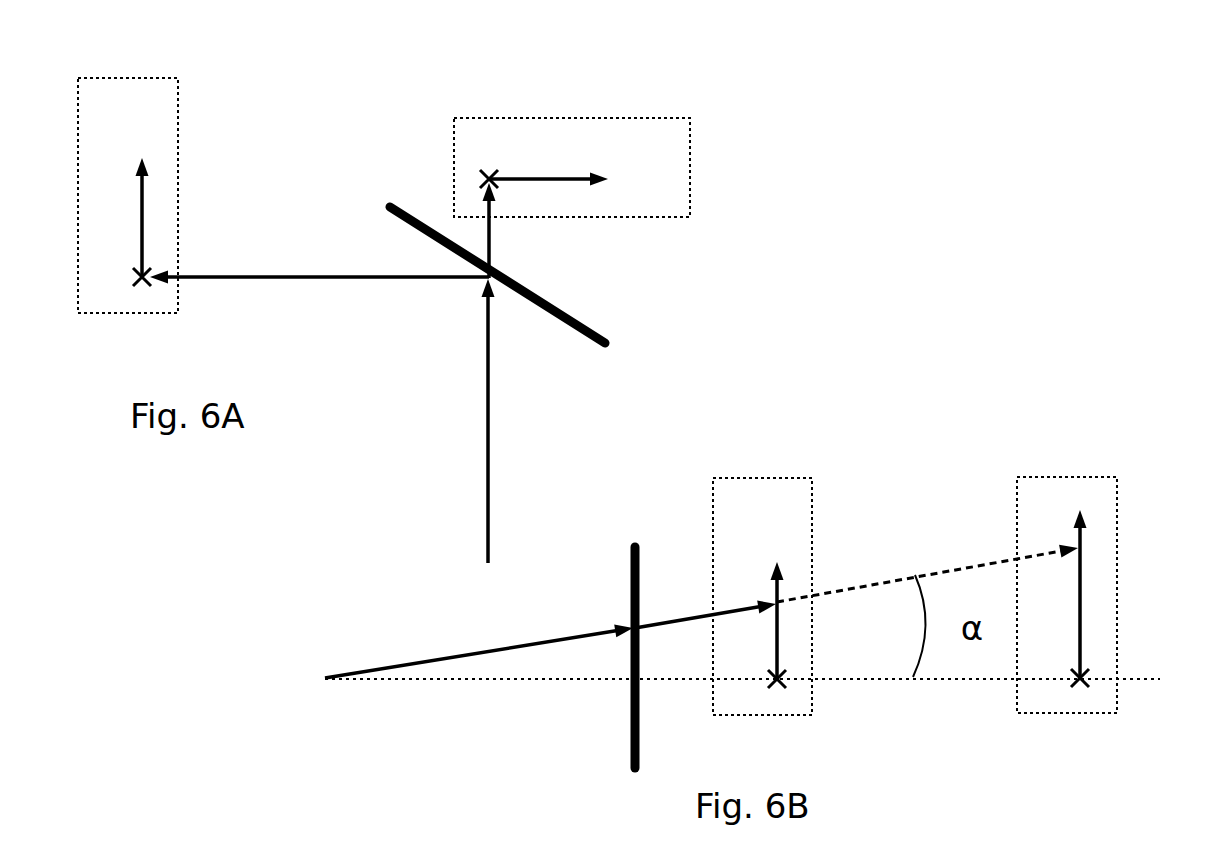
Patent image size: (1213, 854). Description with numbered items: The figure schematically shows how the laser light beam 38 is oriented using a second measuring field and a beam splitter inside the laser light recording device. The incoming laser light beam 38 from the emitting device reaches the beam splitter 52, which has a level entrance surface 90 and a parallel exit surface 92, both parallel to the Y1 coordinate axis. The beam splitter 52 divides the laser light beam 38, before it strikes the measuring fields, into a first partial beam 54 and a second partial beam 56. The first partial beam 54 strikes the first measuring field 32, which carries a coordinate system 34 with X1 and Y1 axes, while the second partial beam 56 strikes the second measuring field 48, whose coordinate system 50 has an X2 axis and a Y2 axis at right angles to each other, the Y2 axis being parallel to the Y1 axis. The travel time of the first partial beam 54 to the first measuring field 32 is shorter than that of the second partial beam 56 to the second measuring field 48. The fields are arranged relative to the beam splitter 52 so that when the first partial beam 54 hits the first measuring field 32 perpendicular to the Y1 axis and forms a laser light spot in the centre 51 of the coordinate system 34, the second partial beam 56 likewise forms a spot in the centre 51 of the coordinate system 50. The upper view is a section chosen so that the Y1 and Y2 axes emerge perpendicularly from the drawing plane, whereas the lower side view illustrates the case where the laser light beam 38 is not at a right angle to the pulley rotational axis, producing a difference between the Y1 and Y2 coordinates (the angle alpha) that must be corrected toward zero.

In FIG. 6A, the first measuring field 32 is at (680, 142).
In FIG. 6B, the first measuring field 32 is at (775, 488).
In FIG. 6A, the coordinate system of the first measuring field 34 is at (560, 178).
In FIG. 6B, the coordinate system of the first measuring field 34 is at (778, 628).
In FIG. 6A, the laser light beam 38 is at (487, 410).
In FIG. 6B, the laser light beam 38 is at (453, 657).
In FIG. 6A, the second measuring field 48 is at (100, 92).
In FIG. 6B, the second measuring field 48 is at (1042, 508).
In FIG. 6A, the coordinate system of the second measuring field 50 is at (145, 197).
In FIG. 6B, the coordinate system of the second measuring field 50 is at (1080, 605).
In FIG. 6A, the centre of the coordinate system 51 is at (155, 268).
In FIG. 6B, the centre of the coordinate system 51 is at (782, 688).
In FIG. 6A, the beam splitter 52 is at (408, 207).
In FIG. 6B, the beam splitter 52 is at (635, 772).
In FIG. 6A, the first partial beam 54 is at (492, 243).
In FIG. 6B, the first partial beam 54 is at (680, 615).
In FIG. 6A, the second partial beam 56 is at (300, 277).
In FIG. 6B, the second partial beam 56 is at (923, 573).
In FIG. 6A, the entrance surface 90 is at (557, 318).
In FIG. 6B, the entrance surface 90 is at (632, 713).
In FIG. 6A, the exit surface 92 is at (607, 331).
In FIG. 6B, the exit surface 92 is at (640, 580).